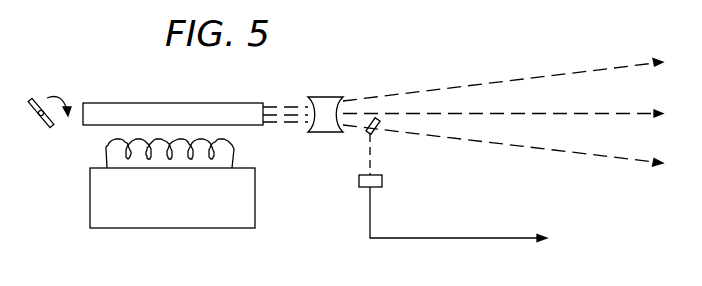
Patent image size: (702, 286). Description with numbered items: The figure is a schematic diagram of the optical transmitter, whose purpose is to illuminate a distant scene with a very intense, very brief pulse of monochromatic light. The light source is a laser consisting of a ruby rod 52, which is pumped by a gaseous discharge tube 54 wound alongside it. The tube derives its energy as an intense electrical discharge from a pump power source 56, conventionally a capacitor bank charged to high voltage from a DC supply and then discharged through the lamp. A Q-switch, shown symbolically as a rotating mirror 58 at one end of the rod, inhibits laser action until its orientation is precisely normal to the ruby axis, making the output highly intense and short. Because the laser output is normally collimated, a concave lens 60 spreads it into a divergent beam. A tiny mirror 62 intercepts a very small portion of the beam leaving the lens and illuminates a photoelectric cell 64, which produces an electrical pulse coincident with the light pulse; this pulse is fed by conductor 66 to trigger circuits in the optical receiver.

The ruby rod 52 is at (122, 108).
The gaseous discharge tube 54 is at (105, 160).
The pump power source 56 is at (90, 210).
The rotating mirror 58 is at (40, 104).
The concave lens 60 is at (330, 101).
The tiny mirror 62 is at (366, 133).
The photoelectric cell 64 is at (358, 188).
The conductor 66 is at (522, 237).